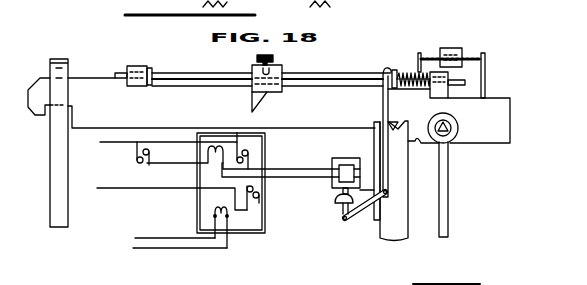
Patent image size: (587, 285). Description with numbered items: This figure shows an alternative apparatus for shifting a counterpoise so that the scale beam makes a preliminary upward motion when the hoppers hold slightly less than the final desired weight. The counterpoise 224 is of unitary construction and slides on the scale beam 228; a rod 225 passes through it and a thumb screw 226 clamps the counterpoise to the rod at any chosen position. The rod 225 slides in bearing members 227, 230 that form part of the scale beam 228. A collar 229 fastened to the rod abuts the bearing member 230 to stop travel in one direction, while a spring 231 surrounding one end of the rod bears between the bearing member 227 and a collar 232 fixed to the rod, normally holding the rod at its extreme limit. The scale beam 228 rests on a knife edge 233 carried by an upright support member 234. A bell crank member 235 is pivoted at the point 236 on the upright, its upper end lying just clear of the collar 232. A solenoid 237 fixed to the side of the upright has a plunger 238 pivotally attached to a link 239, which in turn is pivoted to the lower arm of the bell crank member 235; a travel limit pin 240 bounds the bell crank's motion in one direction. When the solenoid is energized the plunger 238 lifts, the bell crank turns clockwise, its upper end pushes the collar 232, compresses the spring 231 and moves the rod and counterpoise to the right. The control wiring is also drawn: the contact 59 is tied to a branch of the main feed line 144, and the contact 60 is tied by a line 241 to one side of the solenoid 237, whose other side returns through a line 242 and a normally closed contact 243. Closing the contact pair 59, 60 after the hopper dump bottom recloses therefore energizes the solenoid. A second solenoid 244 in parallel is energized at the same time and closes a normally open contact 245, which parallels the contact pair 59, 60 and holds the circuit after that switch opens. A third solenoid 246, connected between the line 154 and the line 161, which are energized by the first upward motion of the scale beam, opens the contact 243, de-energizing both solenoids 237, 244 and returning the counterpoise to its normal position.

The counterpoise 224 is at (278, 65).
The rod 225 is at (338, 76).
The thumb screw 226 is at (256, 59).
The bearing member 227 is at (448, 88).
The scale beam 228 is at (88, 77).
The collar 229 is at (152, 69).
The bearing member 230 is at (137, 65).
The spring 231 is at (405, 71).
The collar 232 is at (392, 70).
The knife edge 233 is at (396, 120).
The upright support member 234 is at (398, 230).
The bell crank member 235 is at (389, 170).
The pivot point 236 is at (388, 192).
The solenoid 237 is at (352, 160).
The plunger 238 is at (336, 200).
The link 239 is at (343, 212).
The travel limit pin 240 is at (375, 128).
The line 241 is at (280, 168).
The line 242 is at (288, 178).
The normally closed contact 243 is at (254, 192).
The second solenoid 244 is at (200, 162).
The normally open contact 245 is at (238, 133).
The third solenoid 246 is at (197, 205).
The main feed line 144 is at (100, 142).
The contact 59 is at (134, 149).
The contact 60 is at (172, 191).
The line 154 is at (137, 238).
The line 161 is at (136, 248).